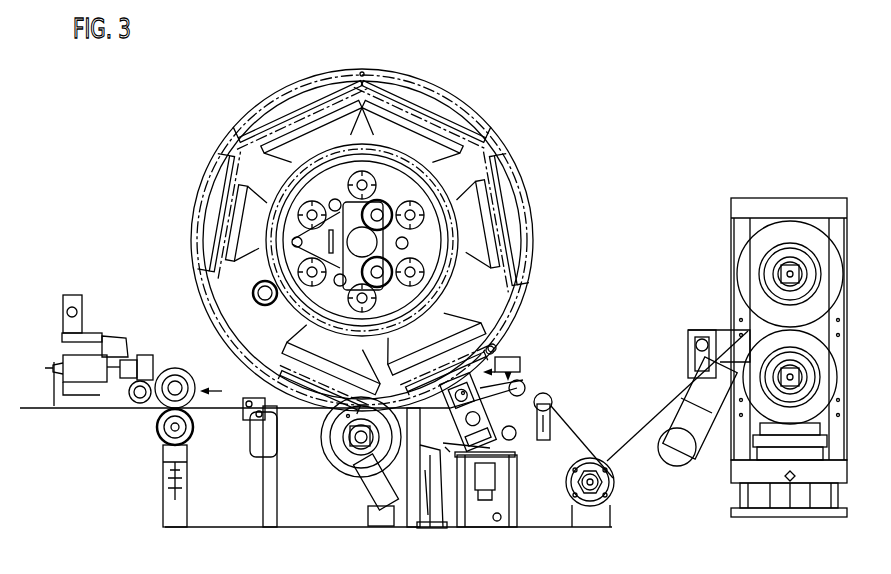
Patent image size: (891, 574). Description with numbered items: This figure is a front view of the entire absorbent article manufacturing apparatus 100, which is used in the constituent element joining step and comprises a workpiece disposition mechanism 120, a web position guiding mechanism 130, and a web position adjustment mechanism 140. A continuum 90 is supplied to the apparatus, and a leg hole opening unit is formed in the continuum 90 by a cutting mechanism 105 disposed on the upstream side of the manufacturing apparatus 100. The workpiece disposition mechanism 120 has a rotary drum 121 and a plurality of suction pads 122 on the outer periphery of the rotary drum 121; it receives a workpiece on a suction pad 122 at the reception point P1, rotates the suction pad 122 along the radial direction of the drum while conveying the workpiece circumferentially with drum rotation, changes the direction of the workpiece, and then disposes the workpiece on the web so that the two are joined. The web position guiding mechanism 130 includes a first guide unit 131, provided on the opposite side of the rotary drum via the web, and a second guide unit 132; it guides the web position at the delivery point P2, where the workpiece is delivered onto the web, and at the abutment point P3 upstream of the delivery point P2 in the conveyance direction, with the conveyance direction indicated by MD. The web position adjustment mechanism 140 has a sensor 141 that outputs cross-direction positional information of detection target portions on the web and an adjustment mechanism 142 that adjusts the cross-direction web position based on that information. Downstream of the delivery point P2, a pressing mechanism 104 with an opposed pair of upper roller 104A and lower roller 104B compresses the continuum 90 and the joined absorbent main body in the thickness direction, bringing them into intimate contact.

The absorbent article manufacturing apparatus 100 is at (509, 95).
The workpiece disposition mechanism 120 is at (400, 70).
The rotary drum 121 is at (258, 283).
The suction pad 122 is at (512, 200).
The pressing mechanism 104 is at (140, 418).
The upper roller 104A is at (175, 368).
The lower roller 104B is at (160, 432).
The web position guiding mechanism 130 is at (455, 464).
The first guide unit 131 is at (365, 480).
The second guide unit 132 is at (525, 387).
The web position adjustment mechanism 140 is at (480, 425).
The sensor 141 is at (520, 362).
The adjustment mechanism 142 is at (494, 351).
The continuum 90 is at (593, 458).
The cutting mechanism 105 is at (808, 186).
The reception point P1 is at (357, 67).
The delivery point P2 is at (345, 418).
The abutment point P3 is at (462, 395).
The machine direction MD is at (216, 383).